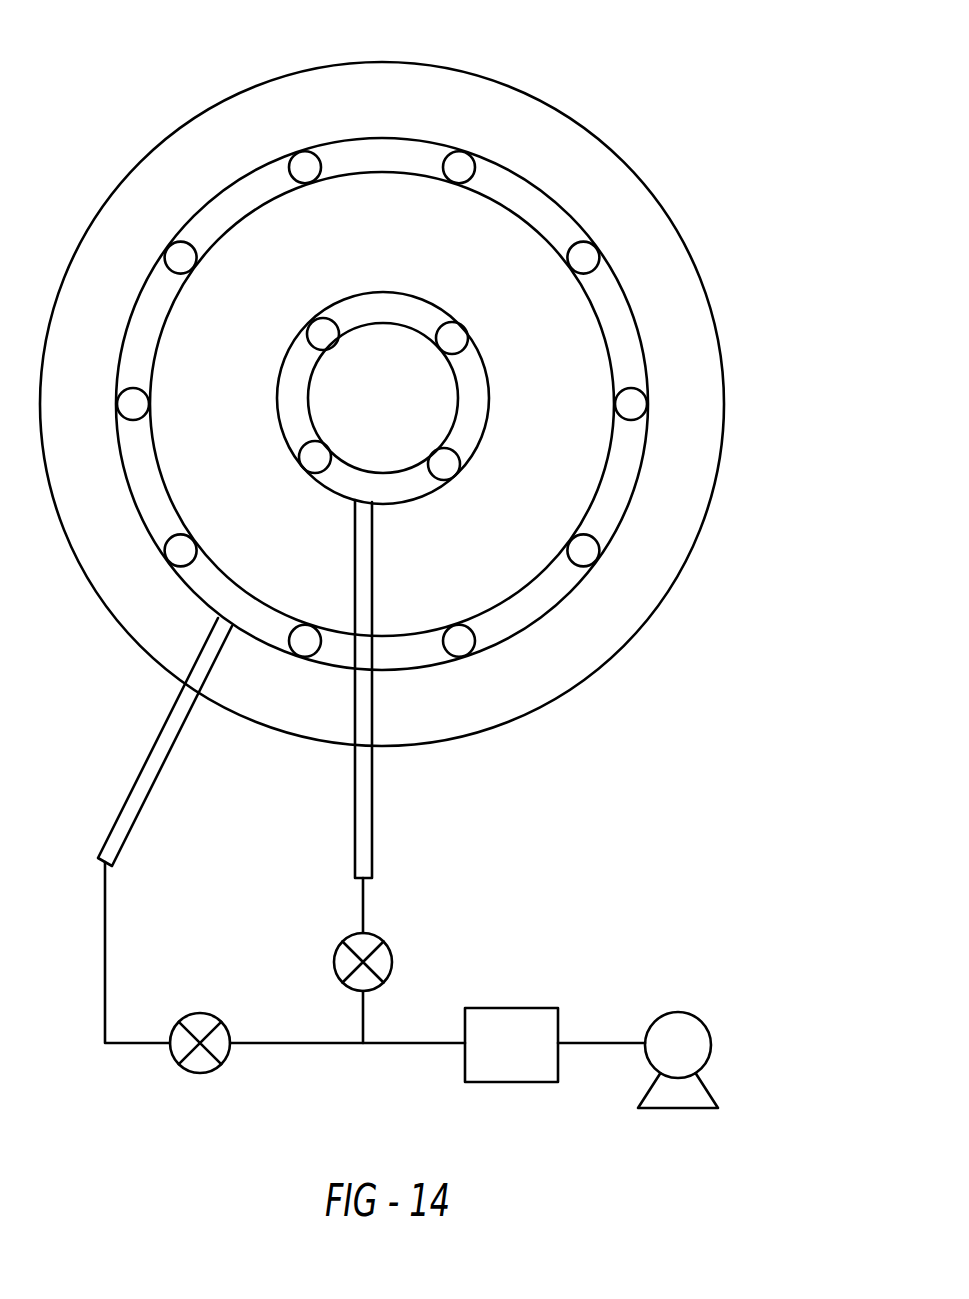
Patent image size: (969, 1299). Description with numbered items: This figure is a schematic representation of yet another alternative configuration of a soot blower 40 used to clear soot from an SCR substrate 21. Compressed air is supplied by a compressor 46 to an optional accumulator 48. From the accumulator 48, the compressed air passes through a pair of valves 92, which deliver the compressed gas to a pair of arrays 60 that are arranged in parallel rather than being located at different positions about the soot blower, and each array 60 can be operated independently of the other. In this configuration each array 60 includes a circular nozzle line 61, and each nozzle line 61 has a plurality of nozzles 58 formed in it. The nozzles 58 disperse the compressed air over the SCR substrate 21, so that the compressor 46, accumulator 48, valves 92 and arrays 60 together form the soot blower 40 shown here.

The soot blower 40 is at (138, 63).
The SCR substrate 21 is at (688, 453).
The nozzles 58 is at (592, 258).
The nozzle line 61 is at (402, 303).
The array 60 is at (150, 723).
The valves 92 is at (334, 962).
The accumulator 48 is at (518, 1083).
The compressor 46 is at (698, 1017).